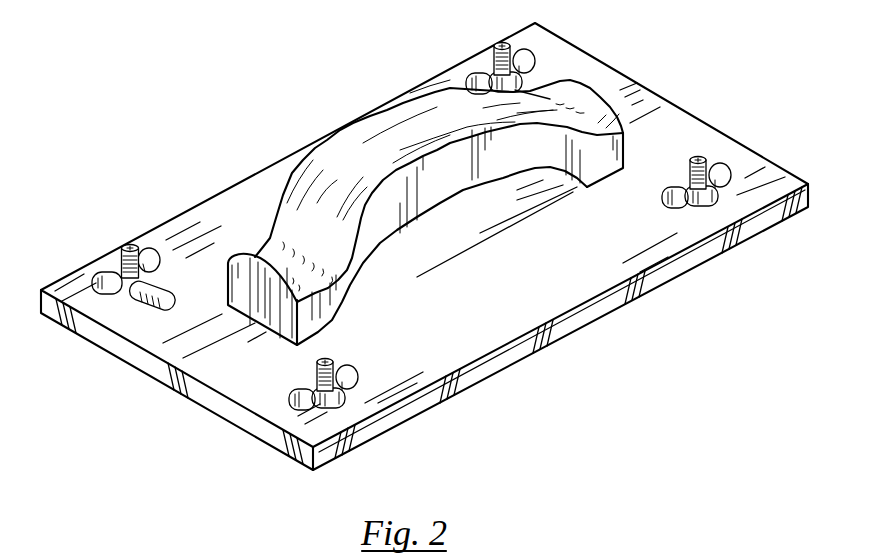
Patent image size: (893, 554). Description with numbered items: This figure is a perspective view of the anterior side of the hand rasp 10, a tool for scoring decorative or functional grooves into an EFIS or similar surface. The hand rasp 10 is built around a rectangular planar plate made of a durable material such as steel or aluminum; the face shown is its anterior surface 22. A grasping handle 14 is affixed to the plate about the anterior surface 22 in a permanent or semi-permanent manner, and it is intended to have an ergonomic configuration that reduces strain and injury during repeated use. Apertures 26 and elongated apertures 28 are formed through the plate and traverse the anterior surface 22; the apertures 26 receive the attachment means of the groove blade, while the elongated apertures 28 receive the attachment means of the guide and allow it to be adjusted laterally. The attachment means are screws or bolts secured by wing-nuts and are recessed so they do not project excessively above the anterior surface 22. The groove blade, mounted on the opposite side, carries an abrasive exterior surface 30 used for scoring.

The hand rasp 10 is at (424, 283).
The grasping handle 14 is at (382, 115).
The anterior surface 22 is at (476, 324).
The apertures 26 is at (321, 421).
The elongated apertures 28 is at (536, 88).
The abrasive exterior surface 30 is at (287, 436).